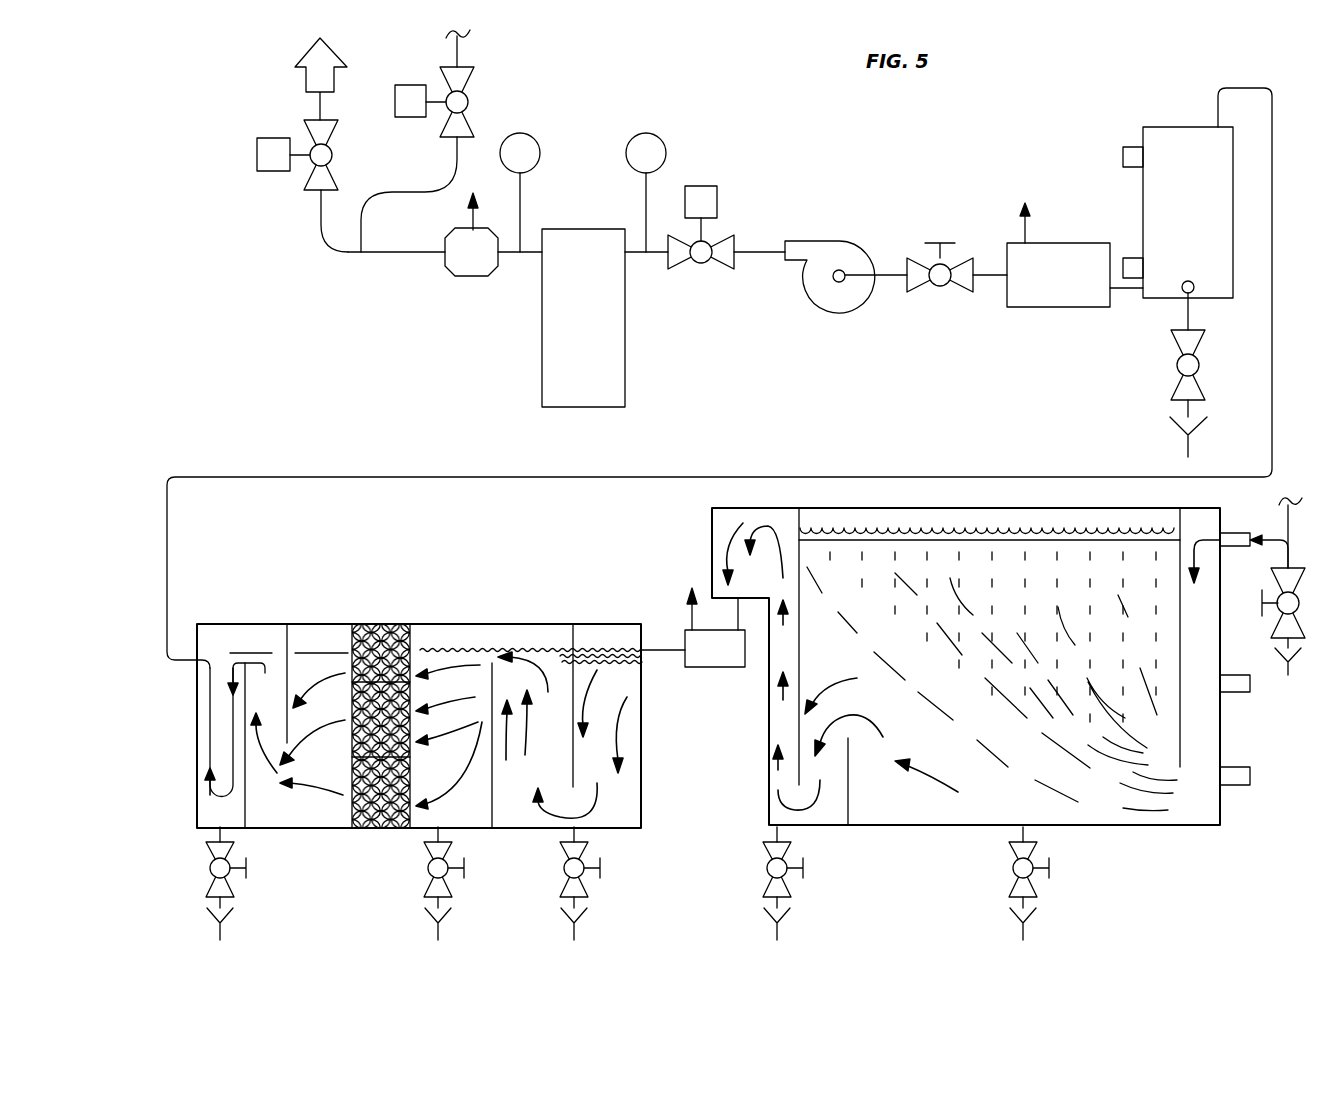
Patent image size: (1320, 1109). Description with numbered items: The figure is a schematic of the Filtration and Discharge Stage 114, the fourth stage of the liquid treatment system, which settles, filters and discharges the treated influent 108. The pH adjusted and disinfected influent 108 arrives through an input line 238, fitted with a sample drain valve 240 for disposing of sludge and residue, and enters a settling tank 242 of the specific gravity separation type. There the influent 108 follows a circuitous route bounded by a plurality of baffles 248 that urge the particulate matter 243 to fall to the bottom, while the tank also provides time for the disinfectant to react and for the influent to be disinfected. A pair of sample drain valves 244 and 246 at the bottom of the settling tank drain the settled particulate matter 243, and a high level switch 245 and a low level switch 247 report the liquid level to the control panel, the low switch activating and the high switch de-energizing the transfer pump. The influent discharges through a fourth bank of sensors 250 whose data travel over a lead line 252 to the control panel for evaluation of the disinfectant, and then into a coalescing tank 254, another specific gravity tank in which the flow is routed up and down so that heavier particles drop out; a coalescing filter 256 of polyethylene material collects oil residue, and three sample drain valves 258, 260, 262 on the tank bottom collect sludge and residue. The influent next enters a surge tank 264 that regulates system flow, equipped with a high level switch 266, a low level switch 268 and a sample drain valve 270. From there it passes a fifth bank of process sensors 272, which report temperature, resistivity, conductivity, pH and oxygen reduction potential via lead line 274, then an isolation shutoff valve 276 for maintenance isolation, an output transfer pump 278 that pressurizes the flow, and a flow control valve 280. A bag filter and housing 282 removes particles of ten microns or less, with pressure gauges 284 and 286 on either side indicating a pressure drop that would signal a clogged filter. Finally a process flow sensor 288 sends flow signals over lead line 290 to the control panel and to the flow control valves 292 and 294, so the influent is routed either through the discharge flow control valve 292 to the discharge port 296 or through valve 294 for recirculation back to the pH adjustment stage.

The influent 108 is at (945, 790).
The Filtration and Discharge Stage 114 is at (245, 355).
The input line 238 is at (1238, 532).
The sample drain valve 240 is at (1277, 626).
The settling tank 242 is at (1150, 828).
The particulate matter 243 is at (1157, 696).
The sample drain valve 244 is at (1035, 893).
The high level switch 245 is at (1252, 686).
The sample drain valve 246 is at (790, 893).
The low level switch 247 is at (1252, 778).
The baffles 248 is at (790, 726).
The fourth bank of sensors 250 is at (715, 668).
The lead line 252 is at (690, 606).
The coalescing tank 254 is at (317, 623).
The coalescing filter 256 is at (386, 623).
The sample drain valve 258 is at (586, 893).
The sample drain valve 260 is at (450, 893).
The sample drain valve 262 is at (232, 893).
The surge tank 264 is at (1170, 126).
The high level switch 266 is at (1123, 157).
The low level switch 268 is at (1133, 257).
The sample drain valve 270 is at (1176, 368).
The fifth bank of process sensors 272 is at (1052, 308).
The lead line 274 is at (1018, 214).
The isolation shutoff valve 276 is at (943, 294).
The output transfer pump 278 is at (832, 240).
The flow control valve 280 is at (735, 237).
The bag filter and housing 282 is at (627, 372).
The pressure gauge 284 is at (657, 138).
The pressure gauge 286 is at (536, 142).
The final process flow sensor 288 is at (466, 278).
The lead line 290 is at (468, 212).
The discharge flow control valve 292 is at (316, 192).
The flow control valve 294 is at (474, 76).
The discharge port 296 is at (300, 50).